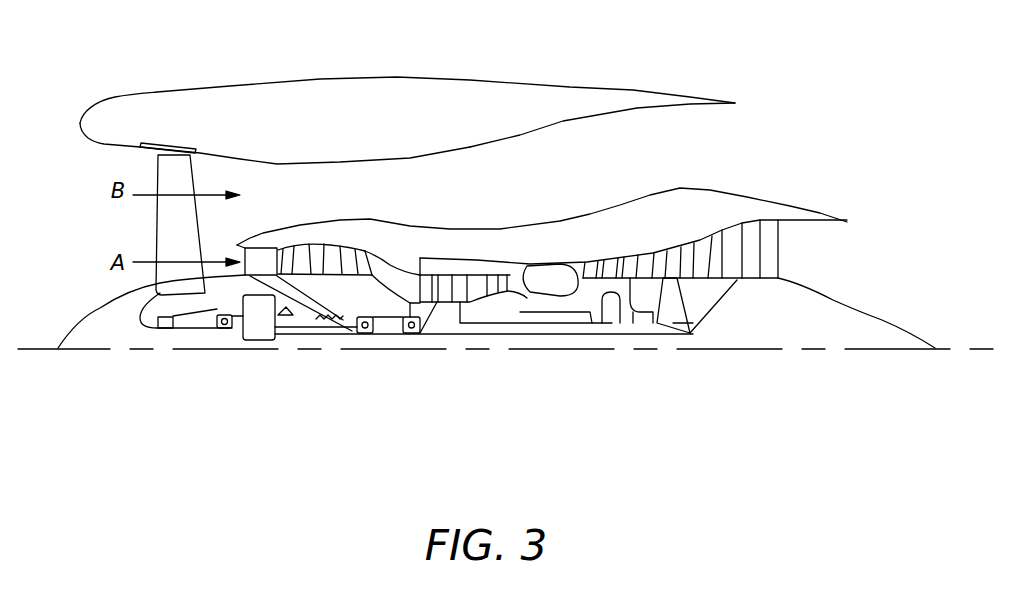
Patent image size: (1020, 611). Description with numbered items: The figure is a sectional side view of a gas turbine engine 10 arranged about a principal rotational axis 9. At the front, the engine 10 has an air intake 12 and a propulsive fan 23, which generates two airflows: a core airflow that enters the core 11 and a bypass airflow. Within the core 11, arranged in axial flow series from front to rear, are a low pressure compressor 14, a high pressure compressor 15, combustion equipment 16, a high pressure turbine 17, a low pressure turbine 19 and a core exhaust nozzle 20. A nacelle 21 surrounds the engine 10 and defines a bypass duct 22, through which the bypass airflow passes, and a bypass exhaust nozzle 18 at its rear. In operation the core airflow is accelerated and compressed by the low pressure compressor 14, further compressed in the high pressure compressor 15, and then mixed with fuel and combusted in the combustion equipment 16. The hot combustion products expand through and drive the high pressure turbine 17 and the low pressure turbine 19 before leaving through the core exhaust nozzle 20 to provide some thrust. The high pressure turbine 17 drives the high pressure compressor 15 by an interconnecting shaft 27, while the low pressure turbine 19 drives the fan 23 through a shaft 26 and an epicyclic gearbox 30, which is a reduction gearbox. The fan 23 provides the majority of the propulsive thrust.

The principal rotational axis 9 is at (727, 351).
The gas turbine engine 10 is at (152, 88).
The core 11 is at (529, 233).
The air intake 12 is at (96, 172).
The low pressure compressor 14 is at (328, 253).
The high pressure compressor 15 is at (473, 285).
The combustion equipment 16 is at (550, 287).
The high pressure turbine 17 is at (613, 268).
The bypass exhaust nozzle 18 is at (737, 145).
The low pressure turbine 19 is at (750, 238).
The core exhaust nozzle 20 is at (824, 250).
The nacelle 21 is at (387, 90).
The bypass duct 22 is at (678, 158).
The propulsive fan 23 is at (157, 226).
The shaft 26 is at (468, 335).
The interconnecting shaft 27 is at (507, 318).
The epicyclic gearbox 30 is at (257, 328).